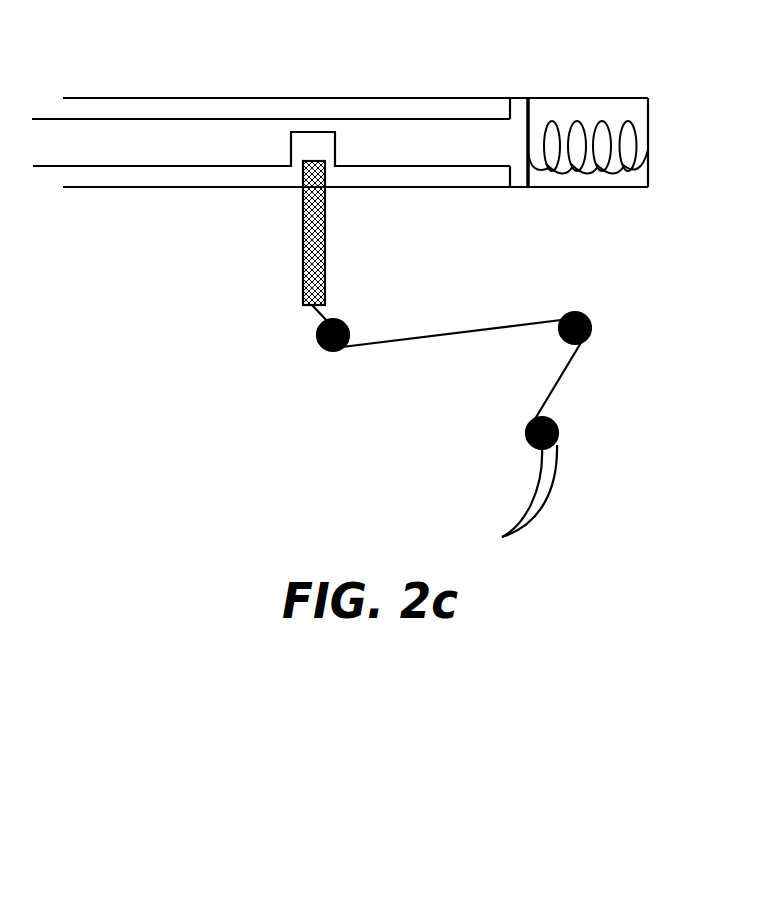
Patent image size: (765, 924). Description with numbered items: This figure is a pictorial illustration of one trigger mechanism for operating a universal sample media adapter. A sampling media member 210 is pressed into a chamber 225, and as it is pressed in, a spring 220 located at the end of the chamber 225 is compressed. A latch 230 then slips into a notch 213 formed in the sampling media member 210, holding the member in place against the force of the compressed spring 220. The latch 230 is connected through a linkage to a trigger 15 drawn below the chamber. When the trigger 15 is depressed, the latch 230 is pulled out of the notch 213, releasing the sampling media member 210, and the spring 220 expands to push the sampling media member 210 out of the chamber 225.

The sampling media member 210 is at (156, 153).
The chamber 225 is at (324, 98).
The notch 213 is at (312, 142).
The spring 220 is at (590, 173).
The latch 230 is at (325, 243).
The trigger 15 is at (548, 497).